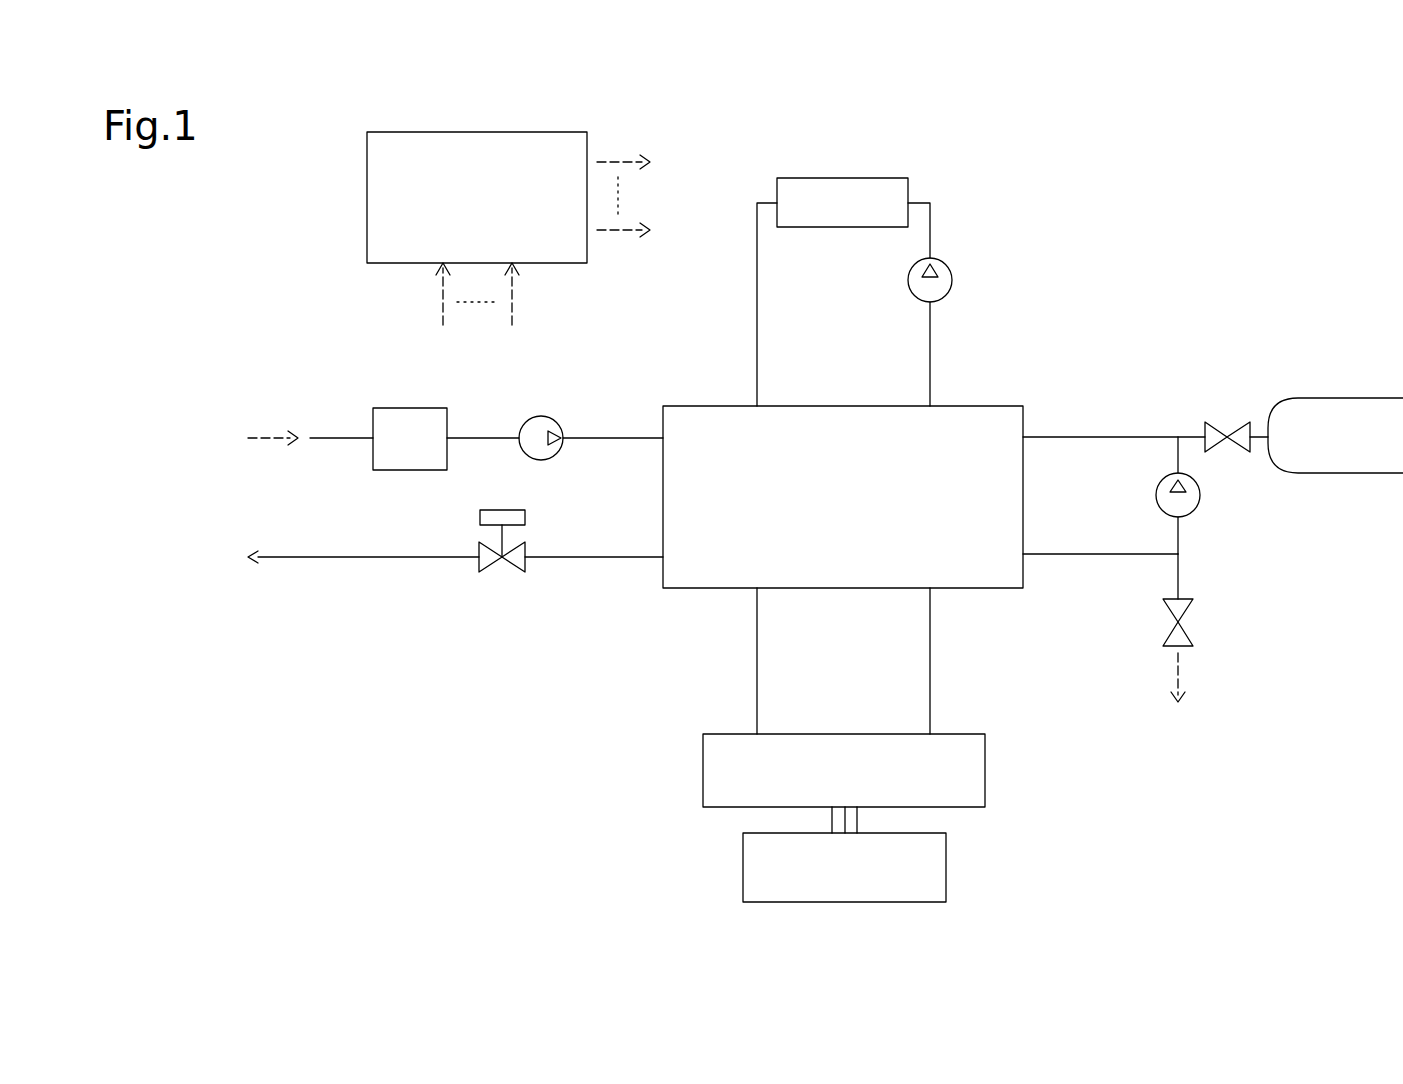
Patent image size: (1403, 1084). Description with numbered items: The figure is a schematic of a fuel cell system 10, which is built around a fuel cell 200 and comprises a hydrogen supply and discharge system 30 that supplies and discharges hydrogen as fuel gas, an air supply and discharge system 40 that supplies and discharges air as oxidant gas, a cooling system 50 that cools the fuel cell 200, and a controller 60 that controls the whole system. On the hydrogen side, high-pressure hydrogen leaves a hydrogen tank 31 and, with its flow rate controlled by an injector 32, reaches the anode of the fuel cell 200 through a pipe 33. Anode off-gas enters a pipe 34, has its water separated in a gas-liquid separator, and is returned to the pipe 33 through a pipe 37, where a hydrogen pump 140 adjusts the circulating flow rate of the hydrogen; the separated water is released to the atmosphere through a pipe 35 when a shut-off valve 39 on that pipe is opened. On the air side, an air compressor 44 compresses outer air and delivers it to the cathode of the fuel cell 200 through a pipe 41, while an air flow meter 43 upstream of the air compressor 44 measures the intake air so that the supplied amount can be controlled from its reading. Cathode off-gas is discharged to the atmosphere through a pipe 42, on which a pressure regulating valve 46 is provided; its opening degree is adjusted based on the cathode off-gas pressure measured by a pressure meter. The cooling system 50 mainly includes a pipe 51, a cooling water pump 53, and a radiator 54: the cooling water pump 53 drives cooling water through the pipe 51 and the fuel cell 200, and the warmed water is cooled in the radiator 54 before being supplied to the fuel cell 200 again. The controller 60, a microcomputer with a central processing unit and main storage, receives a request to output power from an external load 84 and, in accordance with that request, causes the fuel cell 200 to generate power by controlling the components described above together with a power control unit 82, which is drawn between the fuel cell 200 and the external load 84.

The fuel cell system 10 is at (1290, 130).
The hydrogen supply and discharge system 30 is at (1208, 350).
The hydrogen tank 31 is at (1335, 398).
The injector 32 is at (1212, 422).
The pipe 33 is at (1130, 436).
The pipe 34 is at (1052, 554).
The pipe 35 is at (1180, 578).
The pipe 37 is at (1180, 537).
The shut-off valve 39 is at (1192, 632).
The air supply and discharge system 40 is at (596, 364).
The pipe 41 is at (640, 437).
The pipe 42 is at (613, 557).
The air flow meter 43 is at (390, 408).
The air compressor 44 is at (556, 420).
The pressure regulating valve 46 is at (524, 549).
The cooling system 50 is at (942, 163).
The pipe 51 is at (930, 362).
The cooling water pump 53 is at (945, 265).
The radiator 54 is at (790, 178).
The controller 60 is at (367, 160).
The power control unit (PCU) 82 is at (985, 770).
The external load 84 is at (946, 862).
The hydrogen pump 140 is at (1162, 480).
The fuel cell 200 is at (1004, 406).